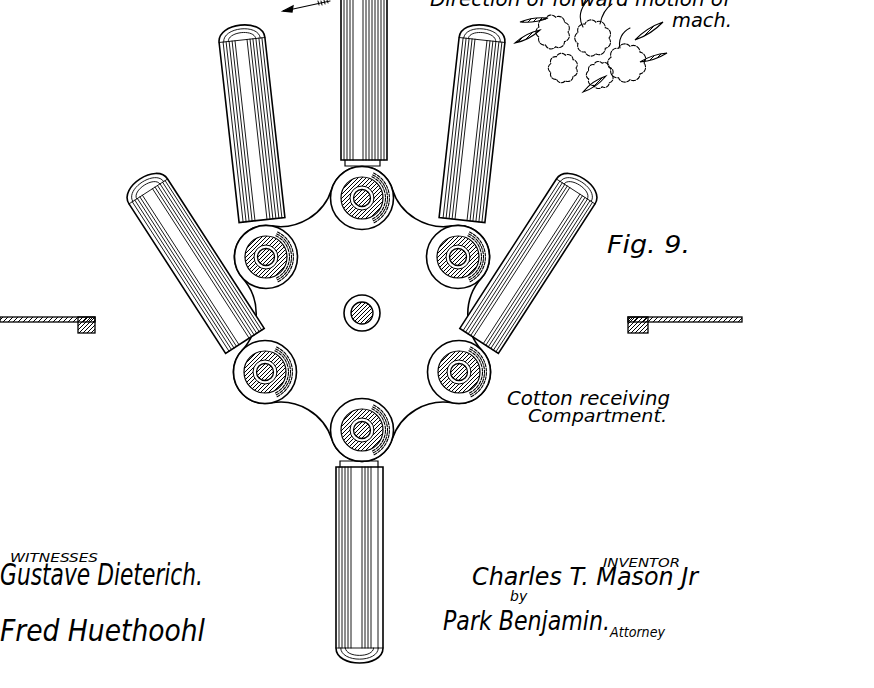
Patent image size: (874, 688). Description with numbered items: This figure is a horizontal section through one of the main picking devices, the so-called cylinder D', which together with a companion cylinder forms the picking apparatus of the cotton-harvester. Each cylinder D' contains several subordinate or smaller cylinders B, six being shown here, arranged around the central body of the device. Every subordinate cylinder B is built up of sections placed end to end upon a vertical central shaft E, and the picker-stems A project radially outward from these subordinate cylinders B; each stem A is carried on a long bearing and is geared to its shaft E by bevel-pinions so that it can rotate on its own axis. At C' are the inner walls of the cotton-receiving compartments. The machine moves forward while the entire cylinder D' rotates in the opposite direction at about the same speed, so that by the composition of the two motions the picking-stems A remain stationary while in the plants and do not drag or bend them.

The picker-stem A is at (358, 124).
The subordinate cylinder B is at (362, 314).
The vertical central shaft E is at (382, 430).
The cylinder D' is at (362, 263).
The inner wall of cotton-receiving compartment C' is at (371, 333).
The carrier plate o is at (361, 313).
The central shaft a is at (358, 325).